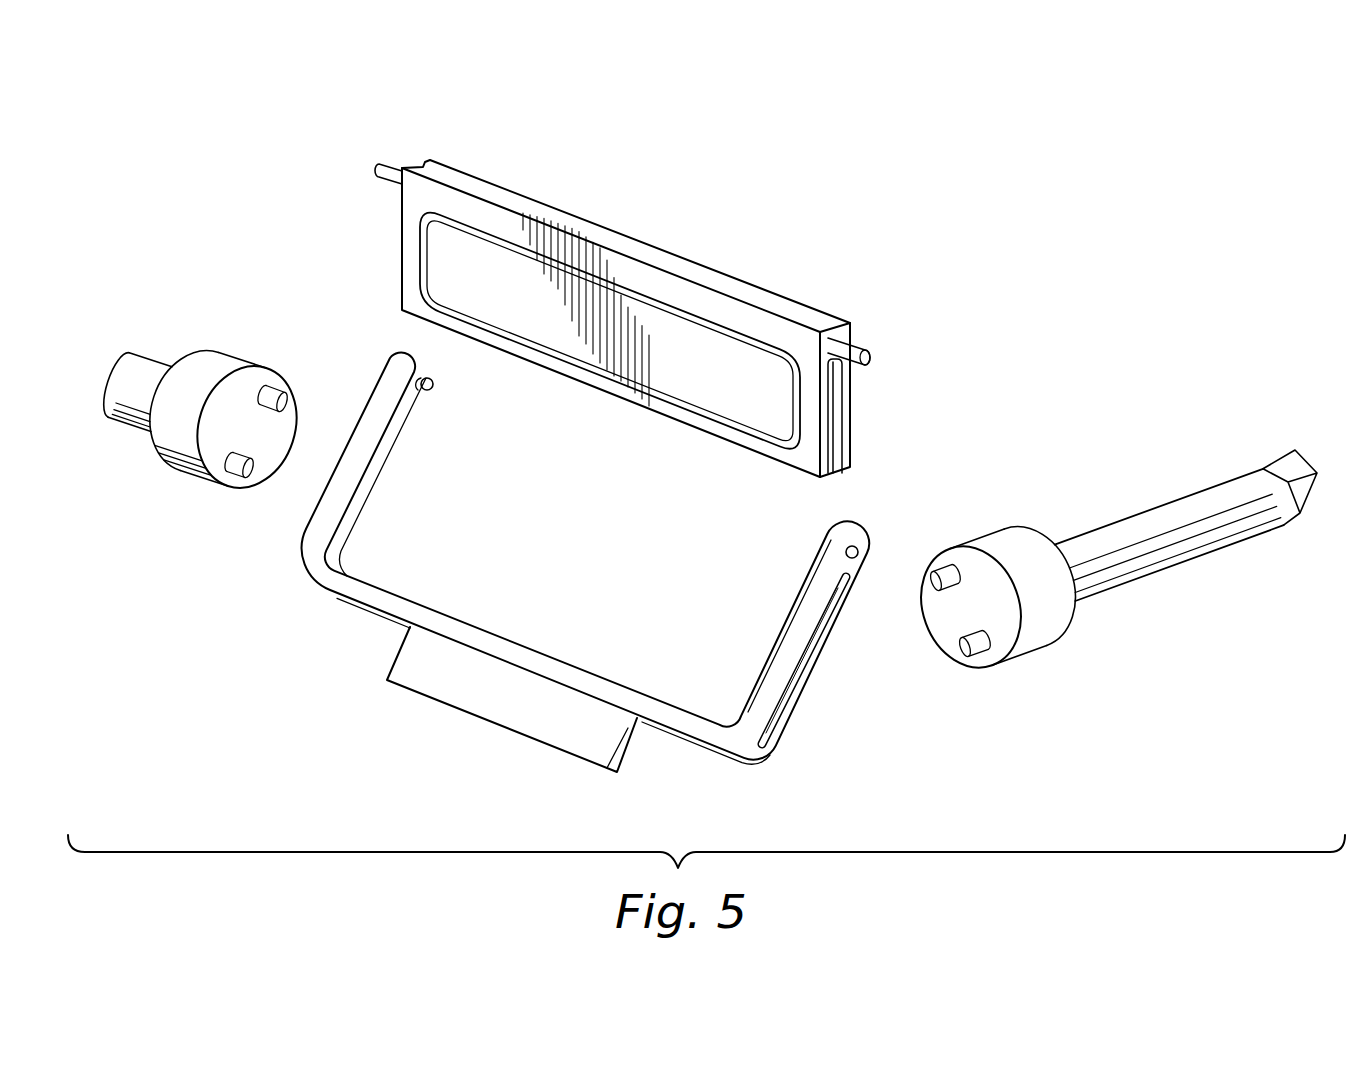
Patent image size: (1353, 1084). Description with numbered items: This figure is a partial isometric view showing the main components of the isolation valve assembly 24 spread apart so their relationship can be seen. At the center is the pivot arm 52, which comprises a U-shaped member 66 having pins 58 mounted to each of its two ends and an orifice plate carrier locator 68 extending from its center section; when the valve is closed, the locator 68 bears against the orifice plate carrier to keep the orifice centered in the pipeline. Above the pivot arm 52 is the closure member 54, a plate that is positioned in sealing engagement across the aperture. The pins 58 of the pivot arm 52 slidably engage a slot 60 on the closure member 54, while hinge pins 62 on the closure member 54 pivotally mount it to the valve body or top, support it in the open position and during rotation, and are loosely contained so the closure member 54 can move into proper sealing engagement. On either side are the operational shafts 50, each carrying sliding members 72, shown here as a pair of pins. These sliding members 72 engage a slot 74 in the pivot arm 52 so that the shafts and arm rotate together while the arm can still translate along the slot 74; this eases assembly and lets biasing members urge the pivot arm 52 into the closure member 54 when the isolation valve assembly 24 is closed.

The isolation valve assembly 24 is at (216, 656).
The operational shafts 50 is at (207, 355).
The pivot arm 52 is at (310, 565).
The closure member 54 is at (620, 268).
The pins 58 is at (433, 391).
The slot 60 is at (838, 406).
The hinge pins 62 is at (388, 160).
The U-shaped member 66 is at (389, 596).
The orifice plate carrier locator 68 is at (437, 702).
The sliding members 72 is at (267, 390).
The slot 74 is at (812, 660).